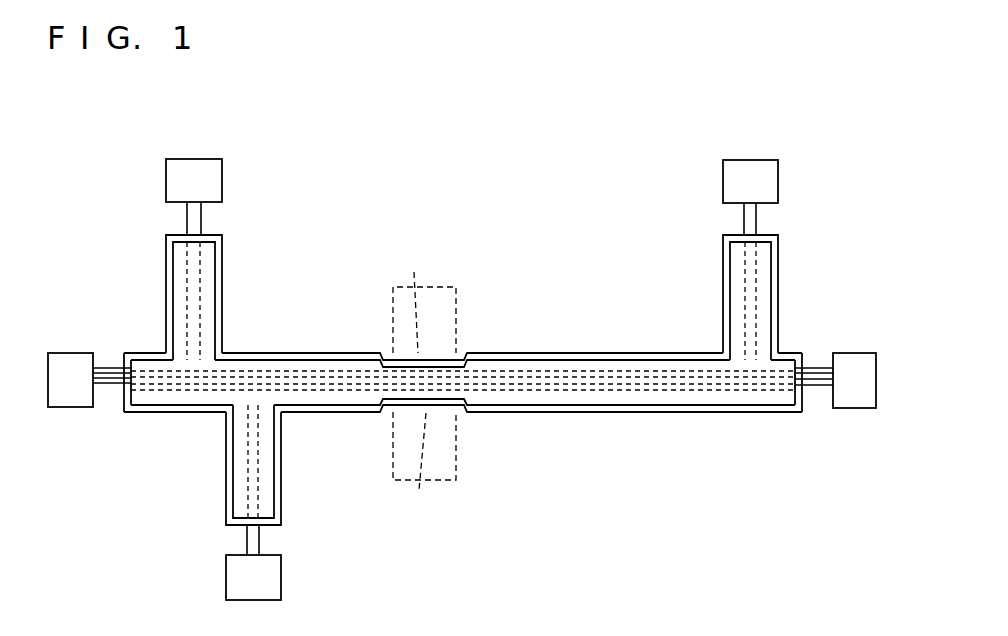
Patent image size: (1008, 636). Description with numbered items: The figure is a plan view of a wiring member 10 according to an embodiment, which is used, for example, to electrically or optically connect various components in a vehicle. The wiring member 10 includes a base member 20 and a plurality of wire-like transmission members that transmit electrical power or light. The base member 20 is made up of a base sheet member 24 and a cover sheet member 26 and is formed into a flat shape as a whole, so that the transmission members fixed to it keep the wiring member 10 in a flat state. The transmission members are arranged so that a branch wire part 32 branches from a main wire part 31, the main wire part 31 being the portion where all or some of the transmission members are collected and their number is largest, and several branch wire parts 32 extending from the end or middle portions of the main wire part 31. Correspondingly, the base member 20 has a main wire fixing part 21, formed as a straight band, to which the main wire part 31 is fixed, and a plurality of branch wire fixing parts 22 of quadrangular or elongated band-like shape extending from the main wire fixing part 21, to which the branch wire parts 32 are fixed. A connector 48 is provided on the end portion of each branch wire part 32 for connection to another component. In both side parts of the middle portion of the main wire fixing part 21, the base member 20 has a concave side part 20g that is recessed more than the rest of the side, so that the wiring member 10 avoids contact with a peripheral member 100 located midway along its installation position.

The wiring member 10 is at (696, 458).
The base member 20 is at (463, 387).
The concave side part 20g is at (421, 385).
The main wire fixing part 21 is at (528, 414).
The branch wire fixing part 22 is at (222, 293).
The base sheet member 24 is at (592, 352).
The cover sheet member 26 is at (647, 352).
The main wire part 31 is at (201, 225).
The branch wire part 32 is at (207, 258).
The connector 48 is at (166, 180).
The peripheral member 100 is at (458, 318).